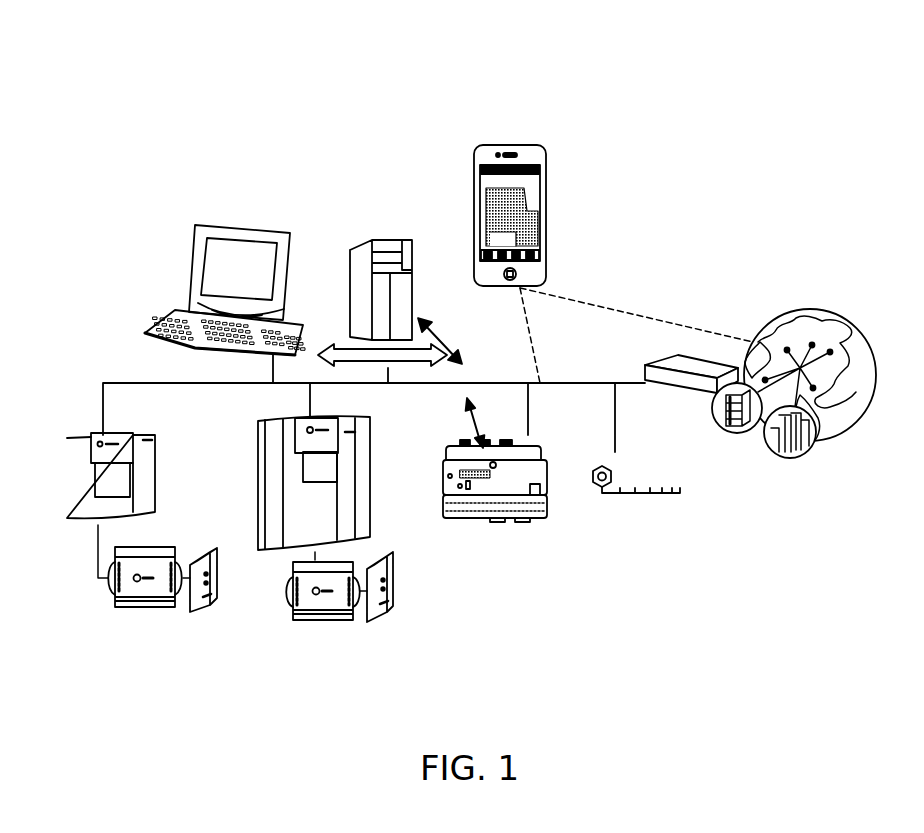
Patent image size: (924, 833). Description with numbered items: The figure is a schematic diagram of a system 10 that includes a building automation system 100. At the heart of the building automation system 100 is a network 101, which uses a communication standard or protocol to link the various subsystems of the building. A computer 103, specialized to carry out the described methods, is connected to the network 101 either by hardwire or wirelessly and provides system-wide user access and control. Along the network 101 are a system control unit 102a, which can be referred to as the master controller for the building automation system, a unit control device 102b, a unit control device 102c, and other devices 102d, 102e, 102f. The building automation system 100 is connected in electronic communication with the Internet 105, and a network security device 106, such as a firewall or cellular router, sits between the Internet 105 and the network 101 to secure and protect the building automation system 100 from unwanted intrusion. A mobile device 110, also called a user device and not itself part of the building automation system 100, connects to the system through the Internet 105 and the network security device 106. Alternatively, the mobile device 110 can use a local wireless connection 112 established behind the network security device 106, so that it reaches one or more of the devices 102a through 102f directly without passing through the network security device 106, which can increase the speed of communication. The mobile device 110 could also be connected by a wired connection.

The system 10 is at (733, 59).
The building automation system 100 is at (663, 552).
The network 101 is at (566, 388).
The system control unit 102a is at (500, 555).
The unit control device 102b is at (397, 626).
The unit control device 102c is at (203, 640).
The device 102d is at (366, 478).
The device 102e is at (77, 522).
The device 102f is at (350, 277).
The computer 103 is at (193, 249).
The Internet 105 is at (677, 323).
The network security device 106 is at (698, 395).
The mobile device 110 is at (518, 143).
The local wireless connection 112 is at (522, 301).